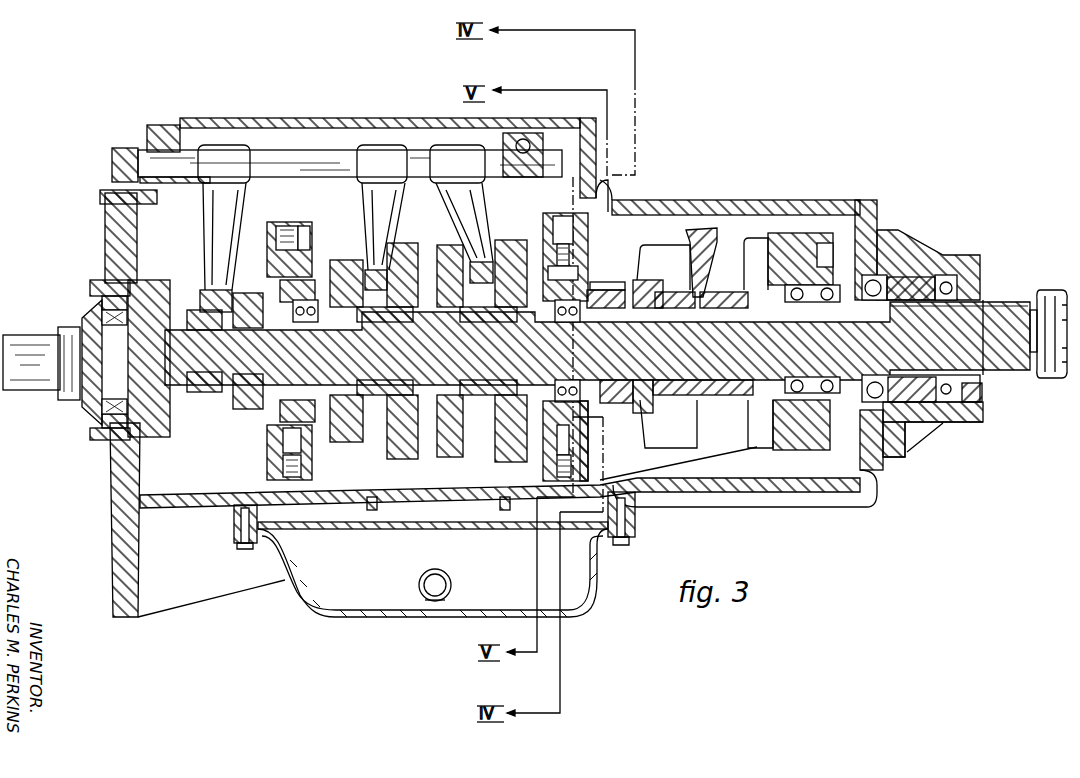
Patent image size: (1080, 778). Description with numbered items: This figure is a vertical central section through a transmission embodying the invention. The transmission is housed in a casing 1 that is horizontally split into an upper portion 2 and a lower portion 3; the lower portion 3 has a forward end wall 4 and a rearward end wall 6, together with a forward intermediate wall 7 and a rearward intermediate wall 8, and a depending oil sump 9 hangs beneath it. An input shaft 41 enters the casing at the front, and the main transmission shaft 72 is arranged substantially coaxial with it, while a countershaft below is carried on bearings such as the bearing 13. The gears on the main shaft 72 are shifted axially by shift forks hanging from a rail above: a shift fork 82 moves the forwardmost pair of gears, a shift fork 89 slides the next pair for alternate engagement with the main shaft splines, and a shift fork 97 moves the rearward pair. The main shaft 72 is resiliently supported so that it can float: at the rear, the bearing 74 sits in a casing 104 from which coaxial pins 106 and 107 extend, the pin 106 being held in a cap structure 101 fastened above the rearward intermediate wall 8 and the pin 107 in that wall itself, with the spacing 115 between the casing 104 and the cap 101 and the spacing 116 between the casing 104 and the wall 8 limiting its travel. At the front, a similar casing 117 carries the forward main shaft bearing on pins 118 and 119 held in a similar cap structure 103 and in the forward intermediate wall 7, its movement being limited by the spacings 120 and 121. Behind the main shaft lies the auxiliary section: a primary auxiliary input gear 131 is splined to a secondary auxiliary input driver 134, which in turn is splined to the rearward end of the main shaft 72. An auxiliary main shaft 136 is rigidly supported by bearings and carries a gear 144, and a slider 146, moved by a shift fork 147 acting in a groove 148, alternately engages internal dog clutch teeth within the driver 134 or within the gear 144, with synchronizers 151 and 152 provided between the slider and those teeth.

The casing 1 is at (707, 190).
The upper portion 2 is at (780, 200).
The lower portion 3 is at (777, 497).
The forward end wall 4 is at (115, 458).
The rearward end wall 6 is at (870, 440).
The forward intermediate wall 7 is at (312, 467).
The rearward intermediate wall 8 is at (590, 443).
The oil sump 9 is at (592, 558).
The bearing 13 is at (310, 304).
The input shaft 41 is at (40, 390).
The main transmission shaft 72 is at (413, 352).
The bearing 74 is at (552, 308).
The shift fork 82 is at (203, 234).
The shift fork 89 is at (372, 222).
The shift fork 97 is at (470, 224).
The cap structure 101 is at (548, 228).
The cap structure 103 is at (247, 224).
The casing 104 is at (562, 420).
The pin 106 is at (552, 250).
The pin 107 is at (556, 471).
The spacing 115 is at (550, 268).
The spacing 116 is at (556, 446).
The casing 117 is at (312, 282).
The pin 118 is at (268, 270).
The pin 119 is at (283, 452).
The spacing 120 is at (310, 238).
The spacing 121 is at (318, 425).
The primary auxiliary input gear 131 is at (600, 290).
The secondary auxiliary input driver 134 is at (650, 282).
The auxiliary main shaft 136 is at (1000, 310).
The gear 144 is at (788, 242).
The slider 146 is at (725, 294).
The shift fork 147 is at (698, 232).
The groove 148 is at (698, 294).
The synchronizer 151 is at (646, 252).
The synchronizer 152 is at (758, 245).